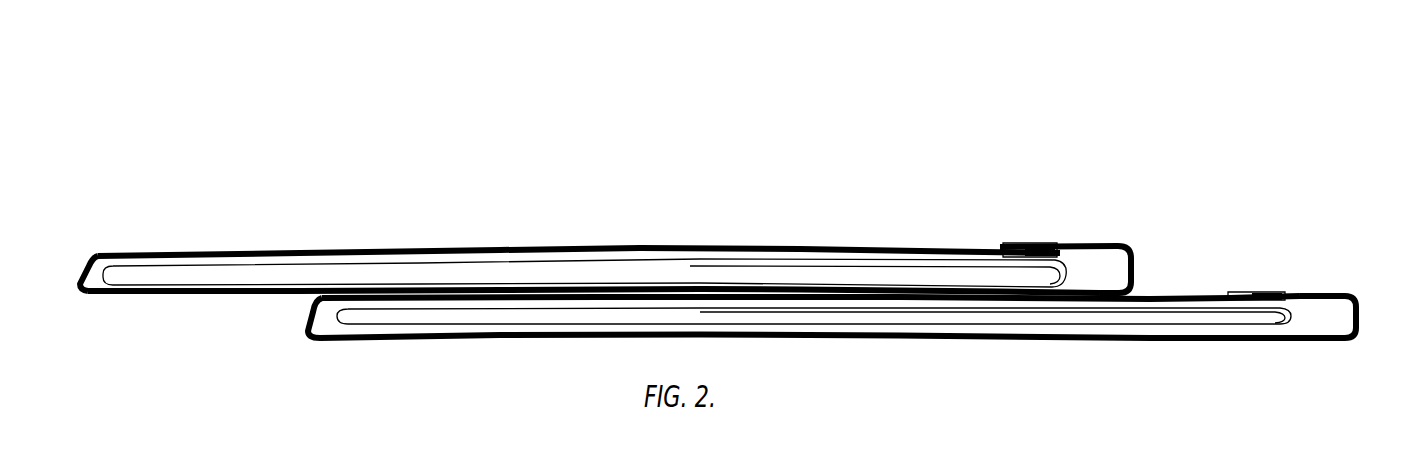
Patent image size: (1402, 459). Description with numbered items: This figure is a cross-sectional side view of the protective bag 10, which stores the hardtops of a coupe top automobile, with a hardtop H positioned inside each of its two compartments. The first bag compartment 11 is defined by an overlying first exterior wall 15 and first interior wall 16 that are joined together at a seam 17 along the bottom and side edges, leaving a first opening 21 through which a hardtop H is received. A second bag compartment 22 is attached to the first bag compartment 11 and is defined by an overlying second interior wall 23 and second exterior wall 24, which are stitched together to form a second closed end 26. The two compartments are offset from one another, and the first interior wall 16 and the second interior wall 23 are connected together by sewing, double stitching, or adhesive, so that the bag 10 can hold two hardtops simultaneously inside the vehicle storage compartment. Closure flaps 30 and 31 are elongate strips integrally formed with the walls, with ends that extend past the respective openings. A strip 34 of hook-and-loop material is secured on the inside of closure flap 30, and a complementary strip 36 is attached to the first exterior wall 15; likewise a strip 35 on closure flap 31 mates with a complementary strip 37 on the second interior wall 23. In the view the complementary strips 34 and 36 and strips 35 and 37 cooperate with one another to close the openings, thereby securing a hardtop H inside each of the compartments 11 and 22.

The protective bag 10 is at (788, 150).
The first bag compartment 11 is at (641, 252).
The first exterior wall 15 is at (900, 250).
The first interior wall 16 is at (158, 297).
The seam 17 is at (83, 262).
The closure flap 30 is at (1103, 242).
The strip of hook-and-loop material 34 is at (1038, 212).
The strip of hook-and-loop material 36 is at (1033, 243).
The first opening 21 is at (1293, 312).
The second interior wall 23 is at (1183, 298).
The second exterior wall 24 is at (440, 341).
The second closed end 26 is at (308, 322).
The closure flap 31 is at (1343, 292).
The second bag compartment 22 is at (1352, 330).
The strip of hook-and-loop material 35 is at (1286, 264).
The strip of hook-and-loop material 37 is at (1265, 290).
The hardtop H is at (247, 270).